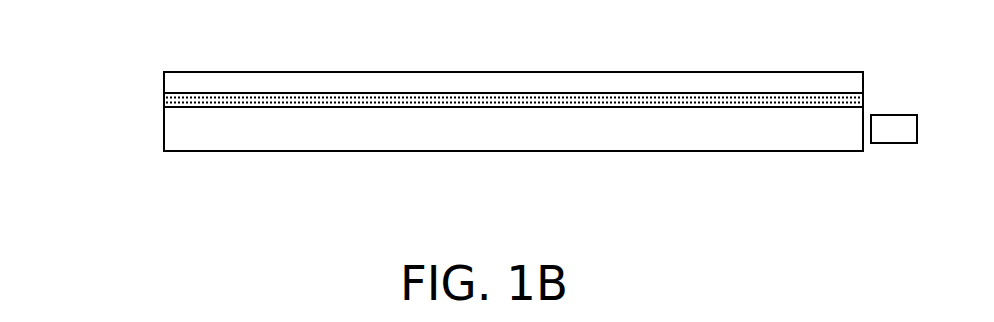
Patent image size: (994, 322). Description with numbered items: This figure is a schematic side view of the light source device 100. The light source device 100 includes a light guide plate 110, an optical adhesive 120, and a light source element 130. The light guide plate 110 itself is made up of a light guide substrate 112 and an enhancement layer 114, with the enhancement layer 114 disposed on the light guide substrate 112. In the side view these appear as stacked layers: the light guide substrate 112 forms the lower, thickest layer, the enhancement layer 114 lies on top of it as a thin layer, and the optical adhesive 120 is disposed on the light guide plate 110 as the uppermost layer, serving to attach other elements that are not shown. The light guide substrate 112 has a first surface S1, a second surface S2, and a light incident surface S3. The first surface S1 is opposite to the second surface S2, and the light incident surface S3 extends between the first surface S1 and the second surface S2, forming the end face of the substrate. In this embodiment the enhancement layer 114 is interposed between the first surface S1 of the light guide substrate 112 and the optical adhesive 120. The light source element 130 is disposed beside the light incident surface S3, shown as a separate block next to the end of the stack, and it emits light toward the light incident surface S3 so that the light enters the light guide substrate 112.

The light source device 100 is at (903, 210).
The light guide plate 110 is at (63, 82).
The light guide substrate 112 is at (173, 130).
The enhancement layer 114 is at (173, 100).
The optical adhesive 120 is at (173, 81).
The light source element 130 is at (892, 123).
The first surface S1 is at (620, 107).
The second surface S2 is at (517, 135).
The light incident surface S3 is at (863, 126).